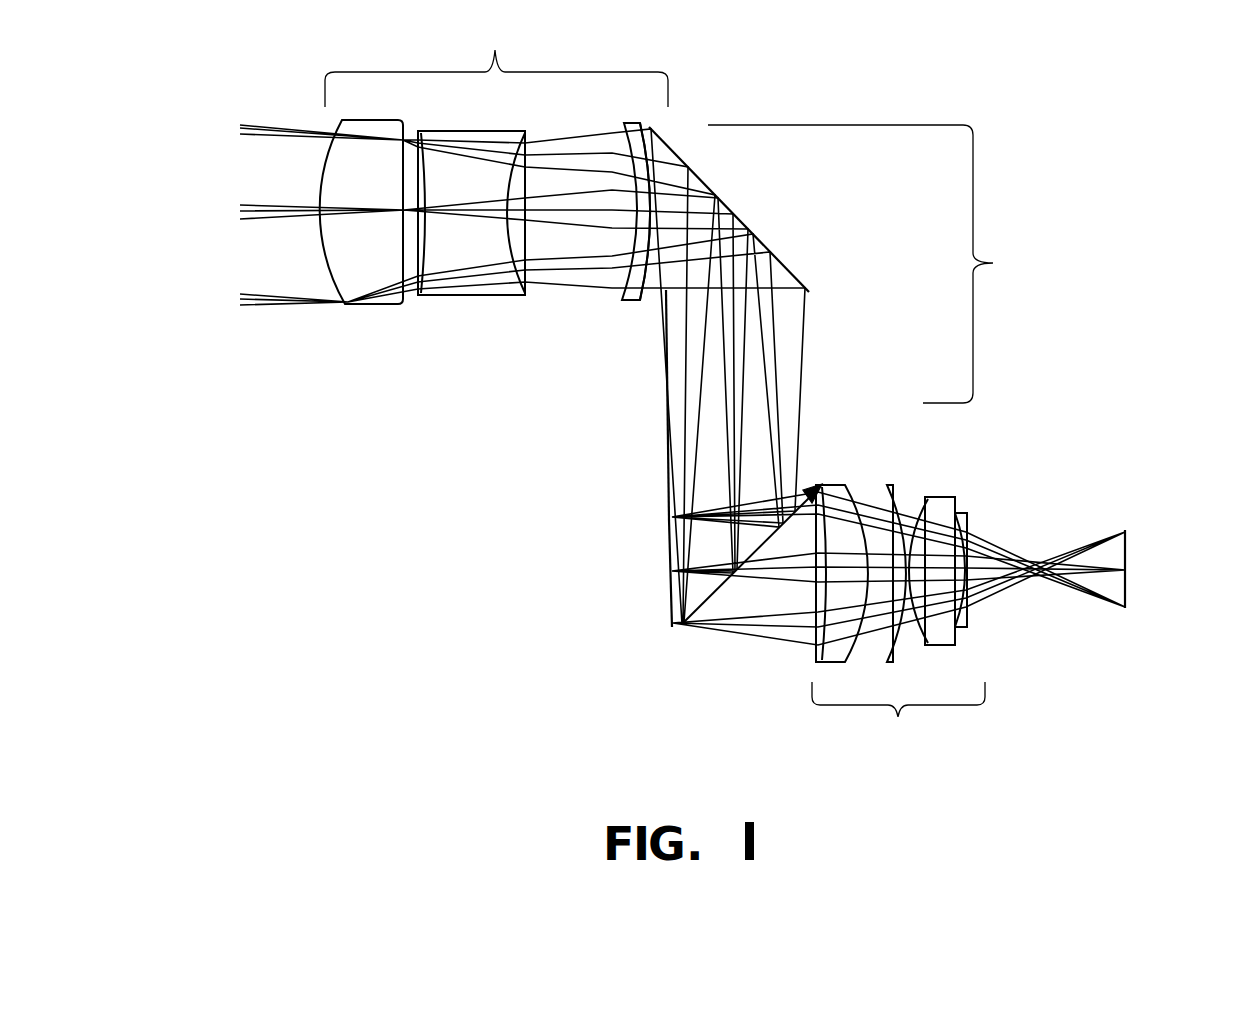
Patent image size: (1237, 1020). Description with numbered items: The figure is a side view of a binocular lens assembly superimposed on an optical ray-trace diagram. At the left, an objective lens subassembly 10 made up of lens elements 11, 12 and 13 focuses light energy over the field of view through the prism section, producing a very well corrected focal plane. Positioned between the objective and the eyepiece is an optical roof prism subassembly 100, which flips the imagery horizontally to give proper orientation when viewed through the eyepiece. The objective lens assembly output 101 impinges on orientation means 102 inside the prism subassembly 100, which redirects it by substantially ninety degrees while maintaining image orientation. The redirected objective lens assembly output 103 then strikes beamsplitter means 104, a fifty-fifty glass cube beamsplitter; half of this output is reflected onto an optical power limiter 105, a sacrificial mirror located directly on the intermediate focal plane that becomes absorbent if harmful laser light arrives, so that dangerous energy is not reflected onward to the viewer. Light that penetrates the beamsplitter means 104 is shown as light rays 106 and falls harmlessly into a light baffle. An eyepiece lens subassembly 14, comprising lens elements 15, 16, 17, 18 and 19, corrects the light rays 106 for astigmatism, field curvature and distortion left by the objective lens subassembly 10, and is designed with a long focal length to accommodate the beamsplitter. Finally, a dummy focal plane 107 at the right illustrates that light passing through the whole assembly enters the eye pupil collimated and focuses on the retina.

The objective lens subassembly 10 is at (496, 62).
The lens element 11 is at (372, 306).
The lens element 12 is at (473, 300).
The lens element 13 is at (622, 303).
The eyepiece lens subassembly 14 is at (898, 716).
The lens element 15 is at (829, 483).
The lens element 16 is at (848, 484).
The lens element 17 is at (893, 485).
The lens element 18 is at (945, 497).
The lens element 19 is at (965, 514).
The optical prism subassembly 100 is at (881, 264).
The objective lens assembly output 101 is at (655, 300).
The orientation means 102 is at (809, 292).
The redirected objective lens assembly output 103 is at (668, 432).
The beamsplitter means 104 is at (672, 630).
The optical power limiter 105 is at (668, 590).
The light rays 106 is at (745, 640).
The dummy focal plane 107 is at (1125, 608).